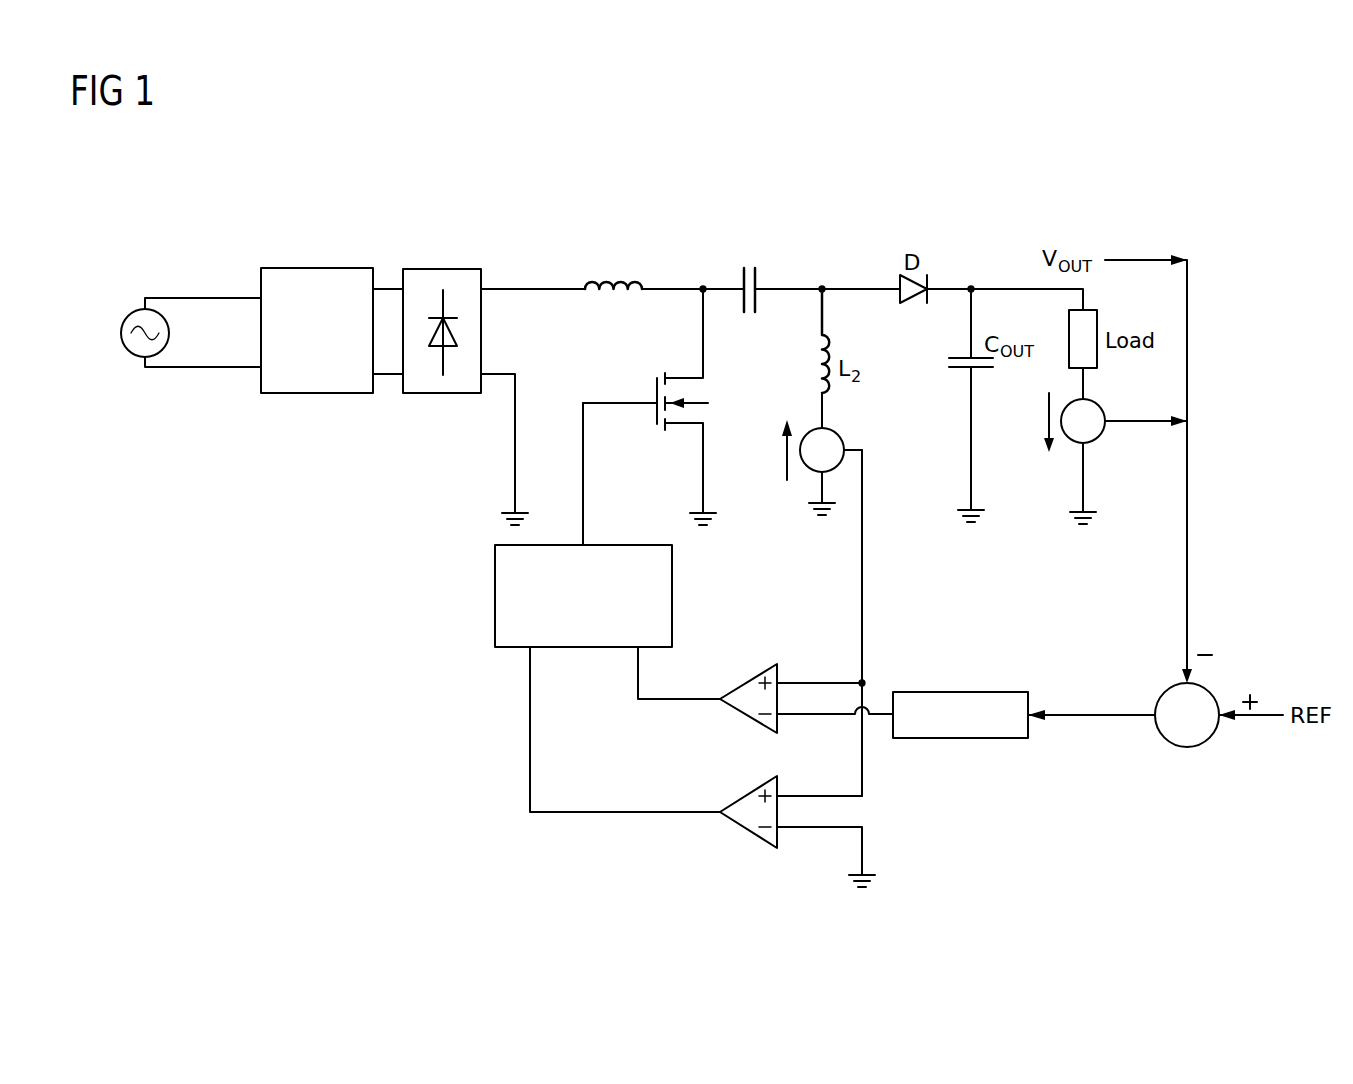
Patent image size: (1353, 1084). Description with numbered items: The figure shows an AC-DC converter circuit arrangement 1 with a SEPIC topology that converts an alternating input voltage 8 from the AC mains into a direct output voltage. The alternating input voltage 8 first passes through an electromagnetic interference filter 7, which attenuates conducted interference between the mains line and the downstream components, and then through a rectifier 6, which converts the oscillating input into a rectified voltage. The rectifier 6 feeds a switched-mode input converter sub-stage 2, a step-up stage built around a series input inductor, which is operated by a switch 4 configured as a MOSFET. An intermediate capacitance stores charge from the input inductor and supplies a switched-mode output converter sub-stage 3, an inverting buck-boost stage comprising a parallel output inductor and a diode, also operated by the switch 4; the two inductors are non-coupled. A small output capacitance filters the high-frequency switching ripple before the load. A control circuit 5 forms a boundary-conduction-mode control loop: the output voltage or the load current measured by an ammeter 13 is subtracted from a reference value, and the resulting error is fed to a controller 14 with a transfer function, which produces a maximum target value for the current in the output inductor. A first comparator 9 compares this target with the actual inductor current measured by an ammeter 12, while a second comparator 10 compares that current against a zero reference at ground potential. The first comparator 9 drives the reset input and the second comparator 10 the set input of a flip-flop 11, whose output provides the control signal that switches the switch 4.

The AC-DC converter circuit arrangement 1 is at (780, 168).
The switched-mode input converter sub-stage 2 is at (614, 222).
The switched-mode output converter sub-stage 3 is at (838, 244).
The switch 4 is at (637, 386).
The control circuit 5 is at (1011, 853).
The rectifier 6 is at (443, 395).
The electromagnetic interference filter 7 is at (317, 395).
The alternating input voltage 8 is at (119, 334).
The first comparator 9 is at (748, 722).
The second comparator 10 is at (745, 820).
The flip-flop 11 is at (495, 596).
The ammeter 12 is at (807, 468).
The ammeter 13 is at (1100, 437).
The controller 14 is at (961, 740).